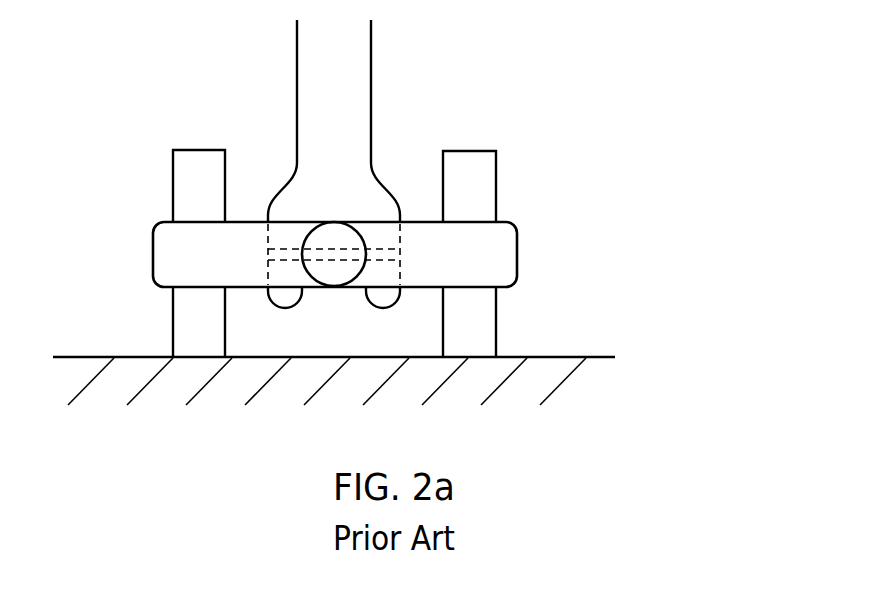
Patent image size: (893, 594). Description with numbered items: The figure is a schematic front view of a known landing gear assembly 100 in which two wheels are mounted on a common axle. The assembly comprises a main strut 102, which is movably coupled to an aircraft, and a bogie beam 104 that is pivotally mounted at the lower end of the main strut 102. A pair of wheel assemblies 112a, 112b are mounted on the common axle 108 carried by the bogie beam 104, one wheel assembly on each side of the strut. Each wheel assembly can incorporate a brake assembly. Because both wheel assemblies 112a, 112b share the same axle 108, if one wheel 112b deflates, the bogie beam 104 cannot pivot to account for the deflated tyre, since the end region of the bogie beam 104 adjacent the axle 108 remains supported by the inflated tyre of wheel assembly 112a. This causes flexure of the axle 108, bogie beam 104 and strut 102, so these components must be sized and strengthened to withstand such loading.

The landing gear assembly 100 is at (667, 79).
The main strut 102 is at (362, 98).
The bogie beam 104 is at (330, 262).
The axle 108 is at (502, 247).
The wheel assembly 112a is at (188, 188).
The wheel assembly 112b is at (497, 175).